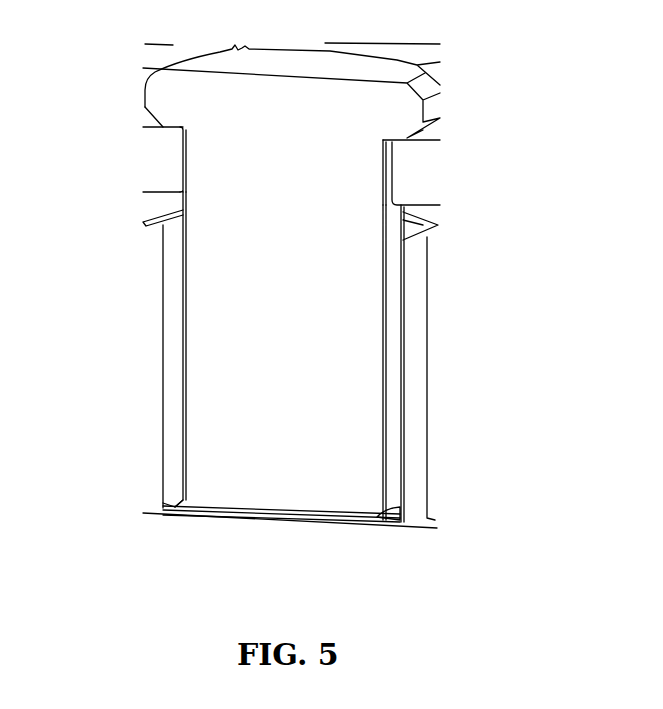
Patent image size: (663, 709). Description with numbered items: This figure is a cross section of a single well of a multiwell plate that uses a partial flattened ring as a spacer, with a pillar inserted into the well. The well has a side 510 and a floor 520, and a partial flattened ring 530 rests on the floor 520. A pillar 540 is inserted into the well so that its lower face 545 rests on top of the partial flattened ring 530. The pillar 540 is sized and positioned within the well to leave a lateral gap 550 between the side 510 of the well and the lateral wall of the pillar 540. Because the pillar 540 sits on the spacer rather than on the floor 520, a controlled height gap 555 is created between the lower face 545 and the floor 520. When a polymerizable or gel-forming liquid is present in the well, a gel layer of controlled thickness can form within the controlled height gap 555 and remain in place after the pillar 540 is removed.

The side 510 is at (165, 443).
The floor 520 is at (282, 522).
The partial flattened ring 530 is at (165, 500).
The pillar 540 is at (385, 270).
The lower face 545 is at (340, 513).
The lateral gap 550 is at (178, 338).
The controlled height gap 555 is at (327, 522).